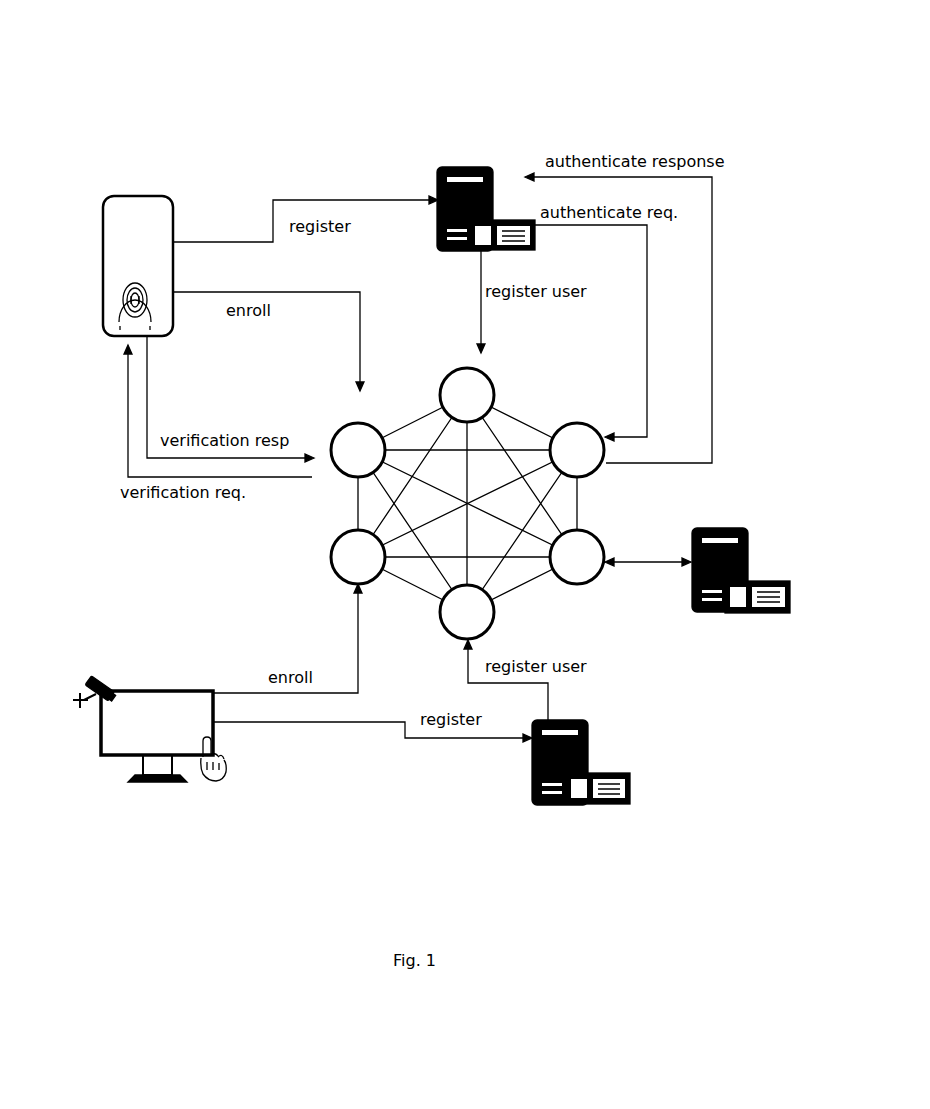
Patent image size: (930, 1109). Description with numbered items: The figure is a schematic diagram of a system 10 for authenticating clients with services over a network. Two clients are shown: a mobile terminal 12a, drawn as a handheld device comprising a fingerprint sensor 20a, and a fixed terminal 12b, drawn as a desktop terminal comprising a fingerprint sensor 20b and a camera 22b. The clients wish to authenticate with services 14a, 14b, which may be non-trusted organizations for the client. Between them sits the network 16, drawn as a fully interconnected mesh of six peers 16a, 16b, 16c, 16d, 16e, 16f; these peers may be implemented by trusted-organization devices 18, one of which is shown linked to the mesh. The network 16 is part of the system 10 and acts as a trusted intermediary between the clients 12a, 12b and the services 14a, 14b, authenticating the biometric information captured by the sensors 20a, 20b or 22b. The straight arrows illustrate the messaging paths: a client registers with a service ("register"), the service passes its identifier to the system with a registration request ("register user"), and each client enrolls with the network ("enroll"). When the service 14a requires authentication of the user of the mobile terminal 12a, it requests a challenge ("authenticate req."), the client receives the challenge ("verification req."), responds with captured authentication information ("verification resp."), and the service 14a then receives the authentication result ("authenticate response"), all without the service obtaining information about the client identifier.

The system 10 is at (311, 148).
The mobile terminal 12a is at (104, 238).
The fixed terminal 12b is at (185, 690).
The service 14a is at (478, 167).
The service 14b is at (532, 785).
The network 16 is at (544, 472).
The peer 16a is at (447, 378).
The peer 16b is at (338, 435).
The peer 16c is at (334, 556).
The peer 16d is at (447, 631).
The peer 16e is at (598, 578).
The peer 16f is at (583, 421).
The trusted-organization device 18 is at (735, 528).
The fingerprint sensor 20a is at (120, 311).
The fingerprint sensor 20b is at (222, 748).
The camera 22b is at (80, 698).